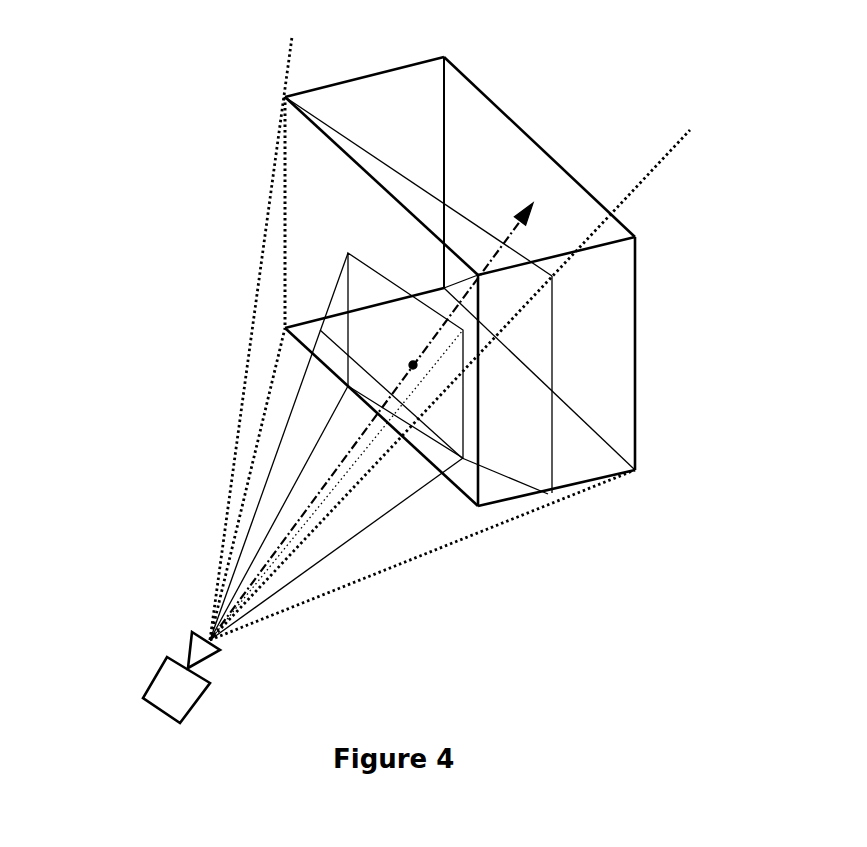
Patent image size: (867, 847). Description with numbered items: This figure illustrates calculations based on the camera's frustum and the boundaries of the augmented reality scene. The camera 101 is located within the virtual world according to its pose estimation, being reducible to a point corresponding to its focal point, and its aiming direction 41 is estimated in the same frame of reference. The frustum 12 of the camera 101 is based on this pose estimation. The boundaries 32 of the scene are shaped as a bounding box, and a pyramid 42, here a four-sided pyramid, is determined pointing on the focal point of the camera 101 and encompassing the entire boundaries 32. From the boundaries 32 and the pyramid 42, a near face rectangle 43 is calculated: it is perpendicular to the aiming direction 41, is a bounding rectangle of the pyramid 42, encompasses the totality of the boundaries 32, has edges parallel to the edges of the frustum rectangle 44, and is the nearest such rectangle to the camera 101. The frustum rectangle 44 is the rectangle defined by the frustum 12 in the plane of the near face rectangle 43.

The frustum 12 is at (398, 507).
The boundaries 32 is at (497, 100).
The aiming direction 41 is at (553, 172).
The pyramid 42 is at (255, 320).
The near face rectangle 43 is at (554, 368).
The frustum rectangle 44 is at (366, 263).
The camera 101 is at (154, 675).